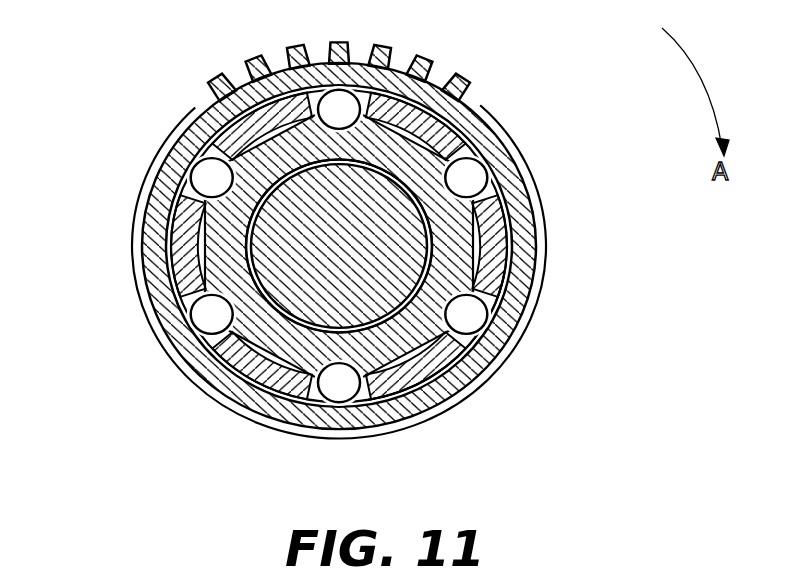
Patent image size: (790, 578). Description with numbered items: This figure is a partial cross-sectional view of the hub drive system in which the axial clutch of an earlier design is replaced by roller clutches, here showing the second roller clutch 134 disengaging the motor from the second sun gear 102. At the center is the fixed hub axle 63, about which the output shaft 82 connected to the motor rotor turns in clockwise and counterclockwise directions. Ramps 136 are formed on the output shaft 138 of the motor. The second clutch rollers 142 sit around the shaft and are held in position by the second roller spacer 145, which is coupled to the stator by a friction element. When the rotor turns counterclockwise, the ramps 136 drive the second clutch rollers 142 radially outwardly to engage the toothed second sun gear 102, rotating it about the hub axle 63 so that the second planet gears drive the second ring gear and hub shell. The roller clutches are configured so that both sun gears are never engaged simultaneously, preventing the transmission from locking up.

The hub axle 63 is at (388, 250).
The output shaft 82 is at (480, 333).
The second sun gear 102 is at (455, 85).
The second roller clutch 134 is at (138, 108).
The ramps 136 is at (360, 98).
The output shaft 138 is at (455, 235).
The second clutch rollers 142 is at (470, 178).
The second roller spacer 145 is at (172, 240).